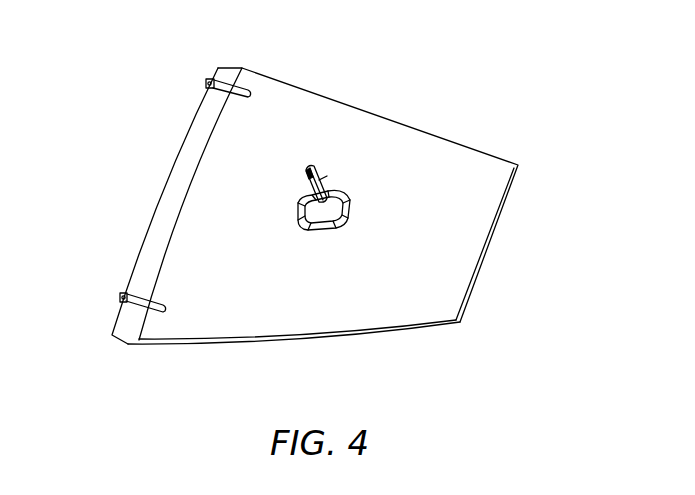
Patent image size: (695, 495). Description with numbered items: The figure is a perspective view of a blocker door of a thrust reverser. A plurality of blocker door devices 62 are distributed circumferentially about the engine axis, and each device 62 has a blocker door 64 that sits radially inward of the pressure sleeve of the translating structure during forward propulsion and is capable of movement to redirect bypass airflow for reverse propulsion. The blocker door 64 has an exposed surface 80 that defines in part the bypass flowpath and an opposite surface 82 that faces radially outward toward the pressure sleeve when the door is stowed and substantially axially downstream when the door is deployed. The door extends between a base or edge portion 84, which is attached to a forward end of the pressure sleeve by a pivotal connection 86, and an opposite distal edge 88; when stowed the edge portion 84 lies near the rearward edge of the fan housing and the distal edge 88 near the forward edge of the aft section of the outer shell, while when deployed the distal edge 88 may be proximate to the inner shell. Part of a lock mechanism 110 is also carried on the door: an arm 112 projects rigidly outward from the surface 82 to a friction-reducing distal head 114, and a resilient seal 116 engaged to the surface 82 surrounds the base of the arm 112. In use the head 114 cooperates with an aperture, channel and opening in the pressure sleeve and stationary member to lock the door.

The blocker door device 62 is at (553, 78).
The blocker door 64 is at (533, 139).
The exposed surface 80 is at (398, 330).
The opposite surface 82 is at (477, 215).
The edge portion 84 is at (148, 208).
The pivotal connection 86 is at (208, 83).
The distal edge 88 is at (482, 263).
The lock mechanism 110 is at (378, 160).
The arm 112 is at (323, 178).
The head 114 is at (309, 168).
The resilient seal 116 is at (354, 197).